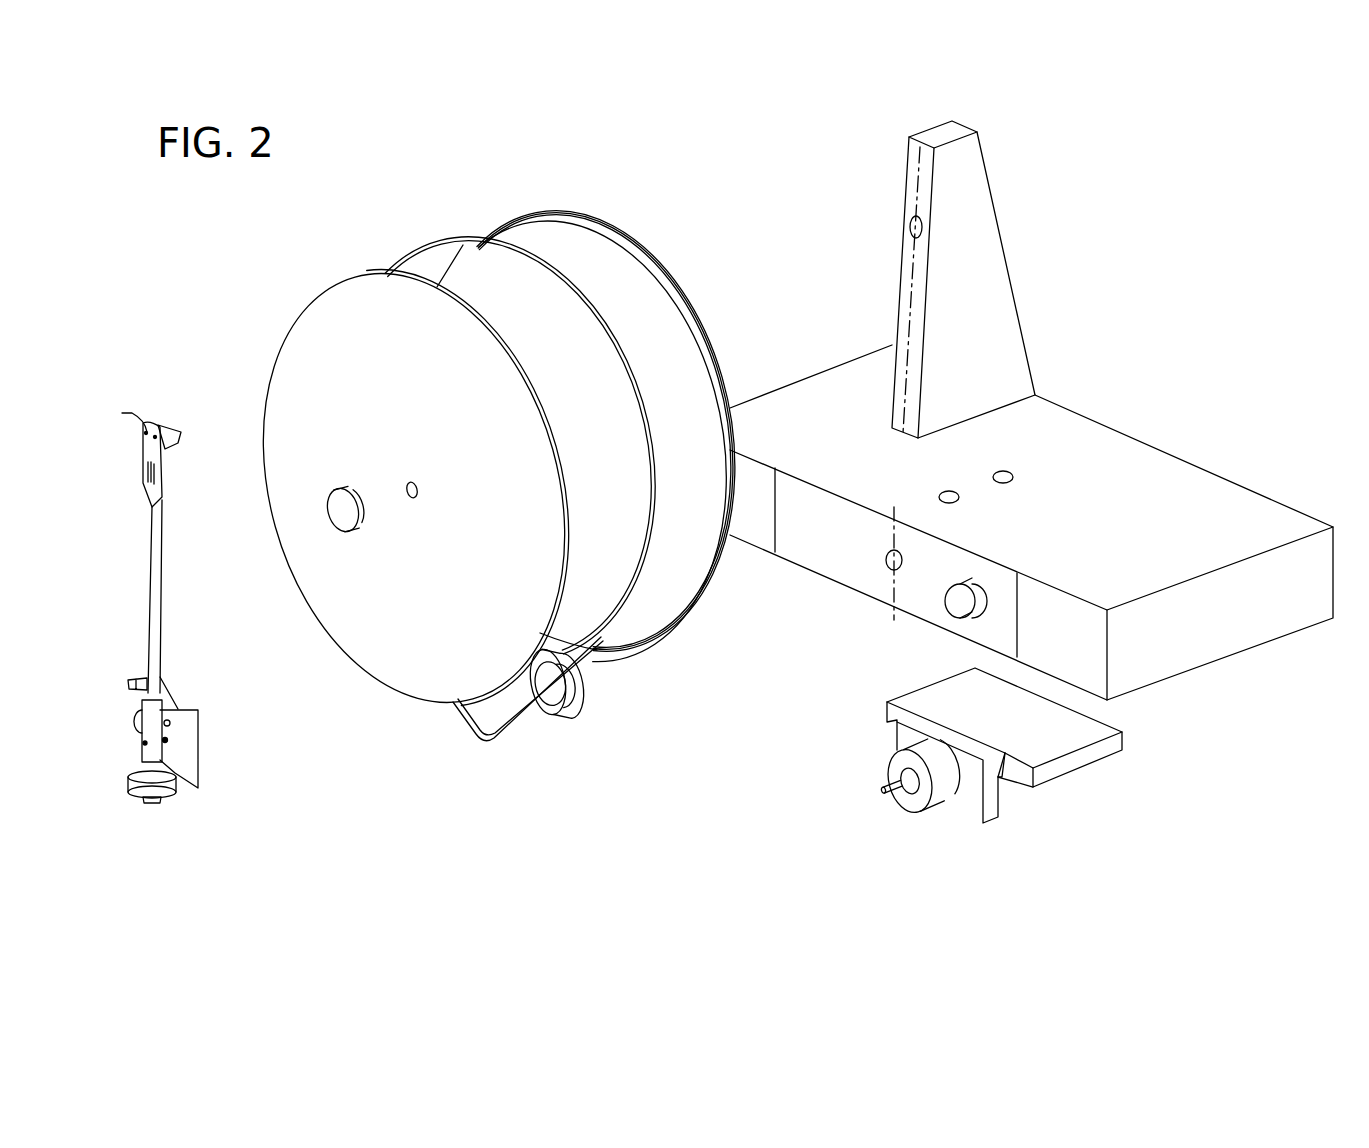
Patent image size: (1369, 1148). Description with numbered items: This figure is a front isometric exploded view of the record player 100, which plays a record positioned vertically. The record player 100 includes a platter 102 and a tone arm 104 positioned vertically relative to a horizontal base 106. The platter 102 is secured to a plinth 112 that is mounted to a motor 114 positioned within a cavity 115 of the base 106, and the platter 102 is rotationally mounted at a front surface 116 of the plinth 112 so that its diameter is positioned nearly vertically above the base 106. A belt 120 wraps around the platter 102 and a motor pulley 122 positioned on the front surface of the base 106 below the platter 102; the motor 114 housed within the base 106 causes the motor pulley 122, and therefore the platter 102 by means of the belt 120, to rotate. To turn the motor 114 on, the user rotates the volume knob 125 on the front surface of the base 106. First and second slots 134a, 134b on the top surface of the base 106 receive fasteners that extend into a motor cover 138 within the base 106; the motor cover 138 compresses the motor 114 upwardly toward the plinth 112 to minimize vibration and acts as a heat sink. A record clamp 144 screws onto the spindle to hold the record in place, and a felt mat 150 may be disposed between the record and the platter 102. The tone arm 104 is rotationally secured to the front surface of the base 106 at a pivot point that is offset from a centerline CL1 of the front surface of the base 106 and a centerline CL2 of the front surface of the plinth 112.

The record player 100 is at (1133, 186).
The platter 102 is at (616, 288).
The tone arm 104 is at (155, 538).
The base 106 is at (1127, 527).
The plinth 112 is at (985, 345).
The motor 114 is at (913, 802).
The cavity 115 is at (1187, 633).
The front surface of the plinth 116 is at (913, 192).
The belt 120 is at (431, 243).
The motor pulley 122 is at (565, 718).
The volume knob 125 is at (960, 605).
The first slot 134a is at (949, 494).
The second slot 134b is at (1006, 470).
The motor cover 138 is at (1095, 765).
The record clamp 144 is at (343, 510).
The felt mat 150 is at (344, 328).
The centerline of the front surface of the base CL1 is at (893, 587).
The centerline of the front surface of the plinth CL2 is at (915, 268).